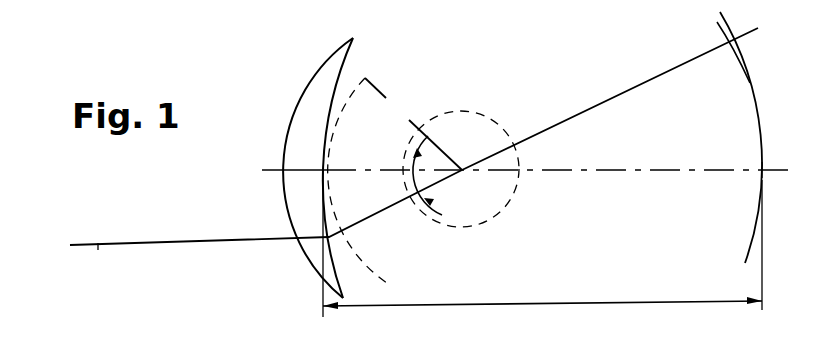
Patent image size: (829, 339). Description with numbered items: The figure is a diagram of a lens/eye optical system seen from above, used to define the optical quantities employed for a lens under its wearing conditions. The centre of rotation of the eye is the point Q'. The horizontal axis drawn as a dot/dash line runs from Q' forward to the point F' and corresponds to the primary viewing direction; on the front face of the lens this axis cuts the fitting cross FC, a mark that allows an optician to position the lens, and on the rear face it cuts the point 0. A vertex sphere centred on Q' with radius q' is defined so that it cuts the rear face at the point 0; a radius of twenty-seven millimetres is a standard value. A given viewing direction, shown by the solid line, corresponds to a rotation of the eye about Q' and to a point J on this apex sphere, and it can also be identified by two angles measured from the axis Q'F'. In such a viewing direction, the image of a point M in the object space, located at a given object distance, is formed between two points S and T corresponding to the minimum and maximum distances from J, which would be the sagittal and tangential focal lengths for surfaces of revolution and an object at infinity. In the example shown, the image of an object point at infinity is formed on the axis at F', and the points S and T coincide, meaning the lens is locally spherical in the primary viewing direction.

The point O 0 is at (318, 168).
The fitting cross FC is at (508, 176).
The point M in the object space M is at (414, 154).
The point J on the apex sphere J is at (357, 180).
The radius q' is at (413, 124).
The centre of rotation of the eye Q' is at (461, 169).
The point S is at (742, 133).
The point T is at (723, 52).
The point F' is at (752, 163).